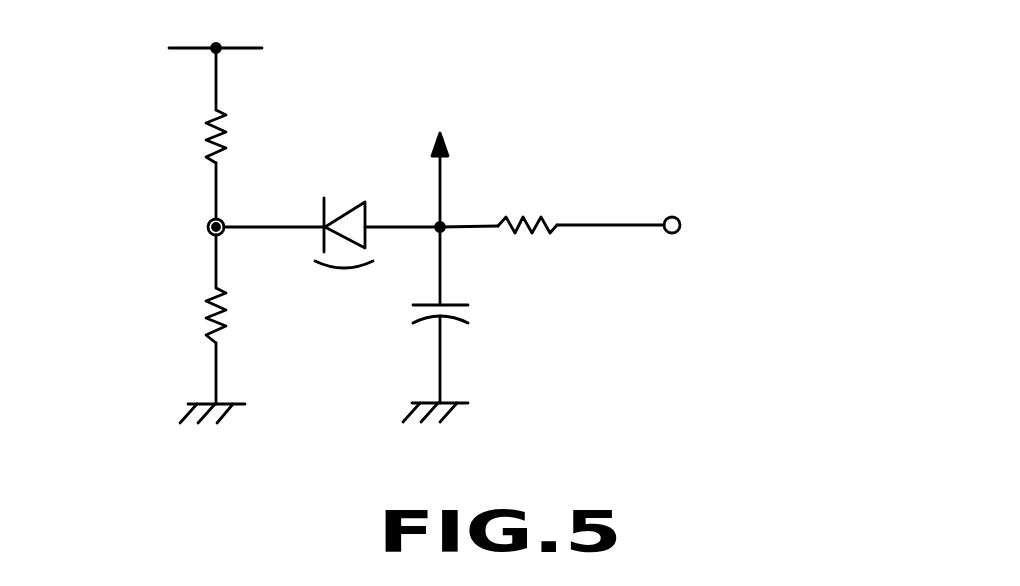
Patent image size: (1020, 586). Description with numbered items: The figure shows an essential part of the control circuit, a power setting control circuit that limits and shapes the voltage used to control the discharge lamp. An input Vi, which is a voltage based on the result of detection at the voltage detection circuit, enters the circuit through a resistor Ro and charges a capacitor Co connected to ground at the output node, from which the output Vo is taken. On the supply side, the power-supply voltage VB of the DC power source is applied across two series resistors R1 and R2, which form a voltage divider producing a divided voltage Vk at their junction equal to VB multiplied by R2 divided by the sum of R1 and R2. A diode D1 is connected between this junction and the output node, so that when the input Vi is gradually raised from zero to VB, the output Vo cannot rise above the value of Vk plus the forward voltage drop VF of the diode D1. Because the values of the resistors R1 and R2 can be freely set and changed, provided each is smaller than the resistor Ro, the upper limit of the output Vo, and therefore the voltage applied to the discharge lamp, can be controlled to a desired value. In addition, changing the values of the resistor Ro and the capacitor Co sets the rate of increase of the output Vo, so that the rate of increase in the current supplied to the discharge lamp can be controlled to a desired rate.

The resistor R1 is at (184, 164).
The resistor R2 is at (184, 319).
The diode D1 is at (381, 198).
The resistor Ro is at (552, 197).
The capacitor Co is at (476, 315).
The output voltage of the DC power source VB is at (217, 55).
The divided voltage Vk is at (233, 232).
The forward voltage drop VF is at (344, 286).
The output Vo is at (452, 153).
The input Vi is at (775, 224).